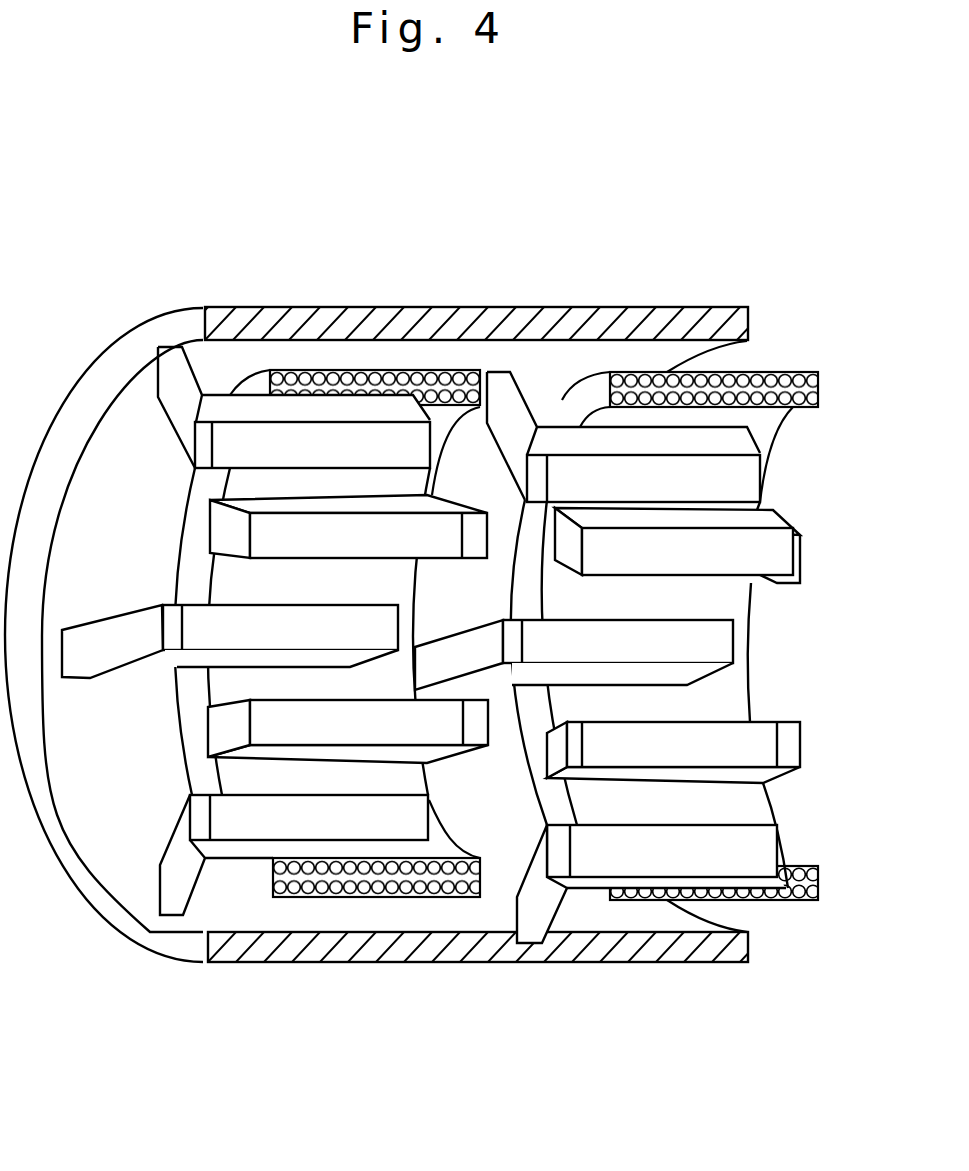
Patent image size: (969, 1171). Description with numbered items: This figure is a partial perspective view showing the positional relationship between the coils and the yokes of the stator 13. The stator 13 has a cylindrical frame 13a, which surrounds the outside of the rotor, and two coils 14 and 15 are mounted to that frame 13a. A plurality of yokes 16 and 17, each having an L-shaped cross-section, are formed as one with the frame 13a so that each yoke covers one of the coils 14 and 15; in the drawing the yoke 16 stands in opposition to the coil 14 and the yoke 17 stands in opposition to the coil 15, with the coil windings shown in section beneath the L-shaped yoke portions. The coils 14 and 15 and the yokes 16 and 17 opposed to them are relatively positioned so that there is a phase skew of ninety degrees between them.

The stator 13 is at (247, 288).
The frame 13a is at (607, 308).
The coil 14 is at (400, 378).
The coil 15 is at (777, 372).
The yoke 16 is at (263, 830).
The yoke 17 is at (687, 652).